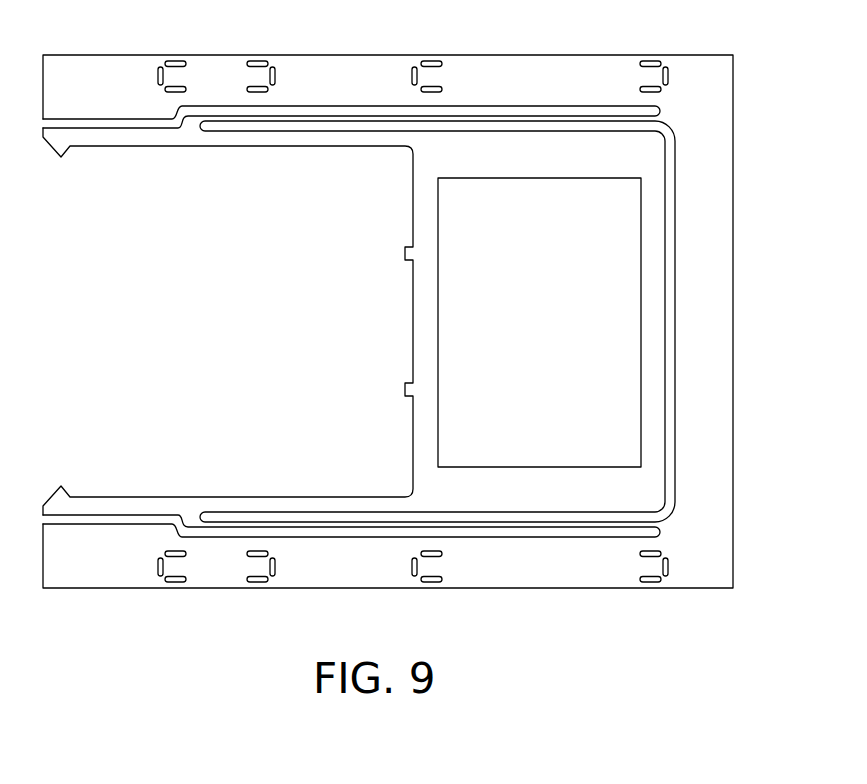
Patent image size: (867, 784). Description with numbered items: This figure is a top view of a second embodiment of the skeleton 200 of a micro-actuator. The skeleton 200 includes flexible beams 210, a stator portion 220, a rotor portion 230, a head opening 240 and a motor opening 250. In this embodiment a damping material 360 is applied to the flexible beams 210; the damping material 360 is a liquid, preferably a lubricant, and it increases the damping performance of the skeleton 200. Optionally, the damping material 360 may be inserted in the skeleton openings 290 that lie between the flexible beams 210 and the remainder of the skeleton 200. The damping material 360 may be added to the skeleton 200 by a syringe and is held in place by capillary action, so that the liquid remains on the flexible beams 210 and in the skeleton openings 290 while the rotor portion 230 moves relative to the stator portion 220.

The skeleton 200 is at (128, 64).
The flexible beams 210 is at (335, 119).
The stator portion 220 is at (718, 325).
The rotor portion 230 is at (655, 479).
The head opening 240 is at (122, 468).
The motor opening 250 is at (623, 218).
The skeleton openings 290 is at (582, 112).
The damping material 360 is at (247, 125).